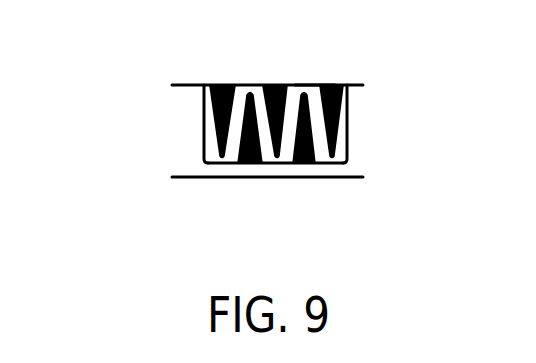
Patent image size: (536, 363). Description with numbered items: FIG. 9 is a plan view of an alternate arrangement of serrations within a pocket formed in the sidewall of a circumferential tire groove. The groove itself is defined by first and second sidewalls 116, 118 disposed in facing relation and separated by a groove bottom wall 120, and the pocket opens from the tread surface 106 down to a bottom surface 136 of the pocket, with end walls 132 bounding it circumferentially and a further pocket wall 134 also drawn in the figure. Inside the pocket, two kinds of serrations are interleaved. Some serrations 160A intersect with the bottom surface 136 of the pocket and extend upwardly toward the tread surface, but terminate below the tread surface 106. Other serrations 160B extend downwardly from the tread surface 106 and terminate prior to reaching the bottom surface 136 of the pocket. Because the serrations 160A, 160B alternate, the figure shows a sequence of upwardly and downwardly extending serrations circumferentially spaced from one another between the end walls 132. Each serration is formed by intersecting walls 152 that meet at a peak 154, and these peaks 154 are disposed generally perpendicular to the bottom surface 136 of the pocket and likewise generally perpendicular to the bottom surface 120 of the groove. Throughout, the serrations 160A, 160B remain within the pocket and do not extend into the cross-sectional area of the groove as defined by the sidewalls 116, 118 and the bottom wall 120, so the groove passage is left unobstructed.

The tread surface 106 is at (177, 83).
The first sidewall 116 is at (125, 120).
The second sidewall 118 is at (206, 124).
The groove bottom wall 120 is at (187, 176).
The end walls 132 is at (350, 137).
The top surface 134 is at (313, 83).
The bottom surface of the pocket 136 is at (347, 157).
The intersecting walls 152 is at (296, 124).
The peaks 154 is at (219, 160).
The upwardly extending serrations 160A is at (299, 163).
The downwardly extending serrations 160B is at (272, 83).